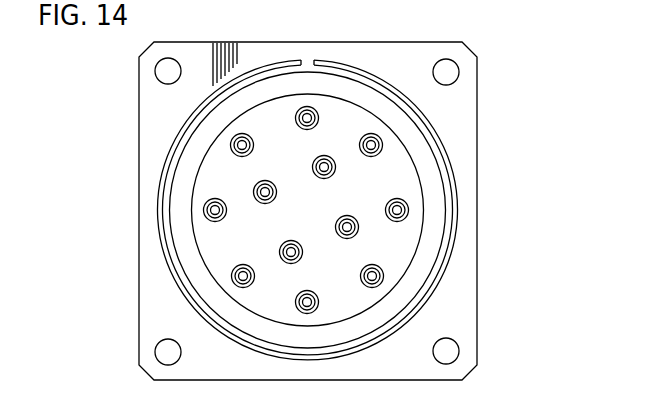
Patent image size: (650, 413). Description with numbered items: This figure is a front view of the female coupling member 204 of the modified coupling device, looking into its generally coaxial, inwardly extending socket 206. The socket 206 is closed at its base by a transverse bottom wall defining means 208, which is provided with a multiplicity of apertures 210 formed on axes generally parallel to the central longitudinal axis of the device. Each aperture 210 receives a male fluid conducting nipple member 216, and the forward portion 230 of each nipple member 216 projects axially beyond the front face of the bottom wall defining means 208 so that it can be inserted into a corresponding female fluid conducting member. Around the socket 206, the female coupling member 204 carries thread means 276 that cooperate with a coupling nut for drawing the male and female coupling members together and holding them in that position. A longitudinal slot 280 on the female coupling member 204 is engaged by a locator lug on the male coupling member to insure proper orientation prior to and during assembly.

The female coupling member 204 is at (482, 183).
The socket 206 is at (423, 150).
The transverse bottom wall defining means 208 is at (401, 251).
The aperture 210 is at (204, 211).
The male fluid conducting nipple member 216 is at (226, 280).
The forward portion of male nipple member 230 is at (231, 144).
The thread means 276 is at (433, 292).
The longitudinal slot 280 is at (311, 62).